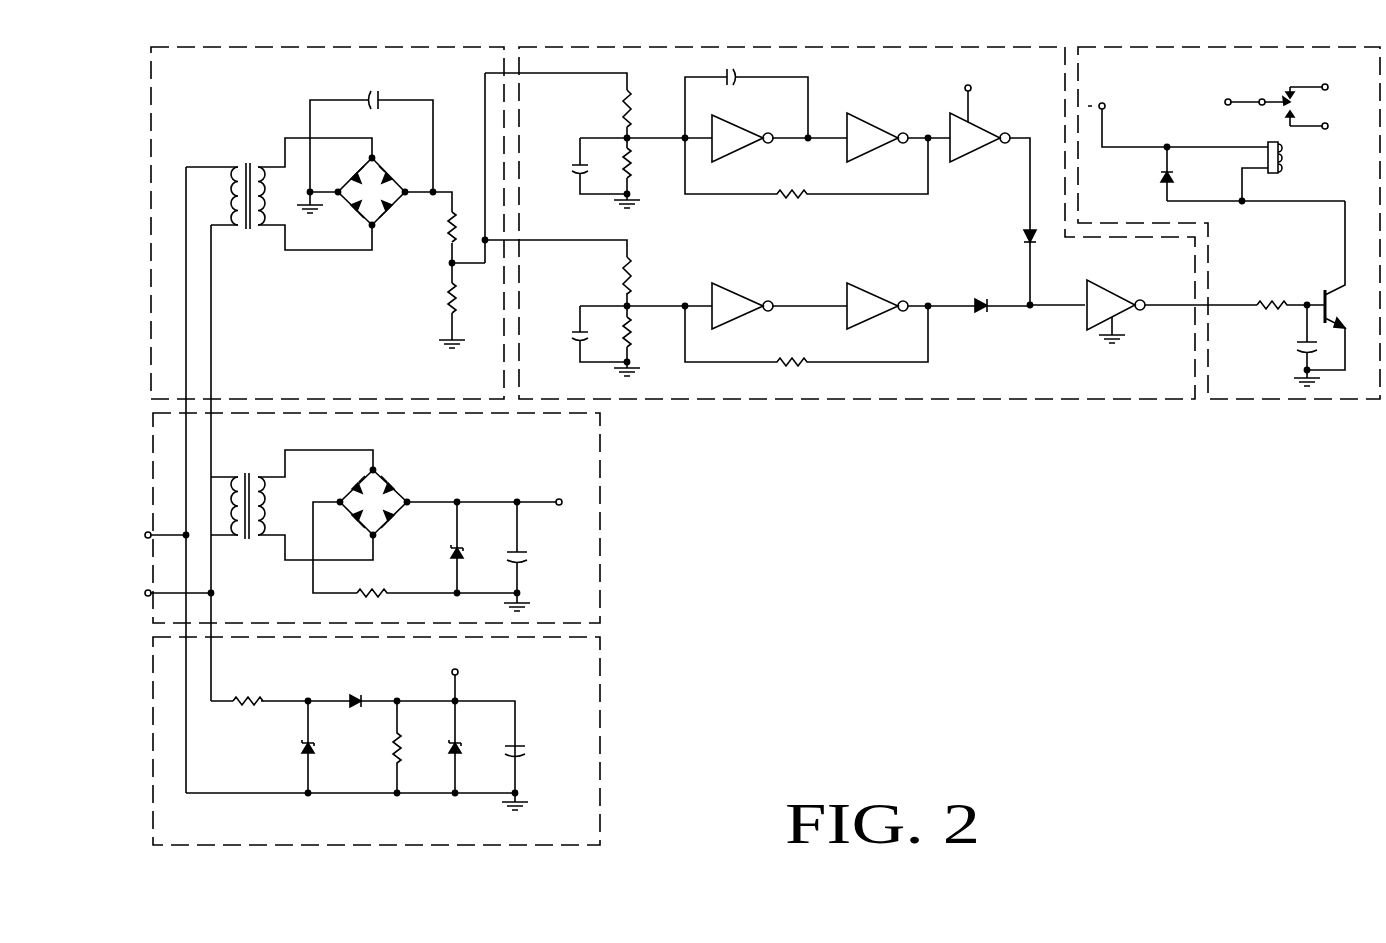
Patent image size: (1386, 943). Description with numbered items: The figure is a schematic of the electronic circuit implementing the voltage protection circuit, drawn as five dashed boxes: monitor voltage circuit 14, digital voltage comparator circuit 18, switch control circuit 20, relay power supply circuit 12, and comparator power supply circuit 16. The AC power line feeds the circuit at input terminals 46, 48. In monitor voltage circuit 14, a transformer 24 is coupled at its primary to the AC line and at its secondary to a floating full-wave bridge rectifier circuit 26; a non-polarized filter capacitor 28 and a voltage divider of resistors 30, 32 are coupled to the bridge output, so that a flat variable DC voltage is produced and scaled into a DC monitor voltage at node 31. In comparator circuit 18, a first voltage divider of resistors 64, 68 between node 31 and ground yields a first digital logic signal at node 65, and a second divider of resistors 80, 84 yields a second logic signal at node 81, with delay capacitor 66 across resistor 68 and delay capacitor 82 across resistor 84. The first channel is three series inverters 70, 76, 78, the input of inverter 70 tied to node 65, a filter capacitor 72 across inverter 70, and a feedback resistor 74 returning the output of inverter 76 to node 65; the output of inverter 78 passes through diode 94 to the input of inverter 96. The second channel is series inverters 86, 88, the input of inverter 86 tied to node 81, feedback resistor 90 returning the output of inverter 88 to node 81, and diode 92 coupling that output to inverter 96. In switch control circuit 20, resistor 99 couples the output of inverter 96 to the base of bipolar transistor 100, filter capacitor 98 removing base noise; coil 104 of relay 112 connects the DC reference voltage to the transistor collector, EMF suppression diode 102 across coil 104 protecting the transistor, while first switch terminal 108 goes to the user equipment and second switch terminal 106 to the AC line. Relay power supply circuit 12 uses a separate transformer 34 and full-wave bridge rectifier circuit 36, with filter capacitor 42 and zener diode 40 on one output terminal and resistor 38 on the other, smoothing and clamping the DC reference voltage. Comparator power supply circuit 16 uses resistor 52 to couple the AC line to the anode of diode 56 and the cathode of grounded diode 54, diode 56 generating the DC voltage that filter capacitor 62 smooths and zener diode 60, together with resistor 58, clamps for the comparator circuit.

The relay power supply circuit 12 is at (600, 461).
The monitor voltage circuit 14 is at (341, 47).
The comparator power supply circuit 16 is at (600, 680).
The digital voltage comparator circuit 18 is at (818, 47).
The switch control circuit 20 is at (1115, 47).
The transformer 24 is at (246, 153).
The floating full-wave bridge rectifier circuit 26 is at (393, 166).
The filter capacitor 28 is at (380, 81).
The resistor 30 is at (450, 219).
The node 31 is at (450, 263).
The resistor 32 is at (450, 290).
The transformer 34 is at (241, 547).
The full-wave bridge rectifier circuit 36 is at (406, 474).
The resistor 38 is at (365, 589).
The zener diode 40 is at (449, 553).
The filter capacitor 42 is at (525, 562).
The input terminal 46 is at (146, 533).
The input terminal 48 is at (146, 591).
The resistor 52 is at (250, 713).
The diode 54 is at (303, 750).
The diode 56 is at (352, 694).
The resistor 58 is at (390, 750).
The zener diode 60 is at (462, 752).
The filter capacitor 62 is at (524, 759).
The resistor 64 is at (620, 100).
The node 65 is at (632, 118).
The delay capacitor 66 is at (578, 177).
The resistor 68 is at (633, 160).
The digital logic inverter 70 is at (738, 116).
The filter capacitor 72 is at (722, 68).
The feedback resistor 74 is at (797, 200).
The digital logic inverter 76 is at (868, 116).
The digital logic inverter 78 is at (985, 118).
The resistor 80 is at (620, 267).
The node 81 is at (632, 286).
The delay capacitor 82 is at (578, 344).
The resistor 84 is at (633, 328).
The inverter 86 is at (738, 284).
The inverter 88 is at (868, 286).
The feedback resistor 90 is at (797, 368).
The diode 92 is at (980, 315).
The diode 94 is at (1024, 236).
The inverter 96 is at (1114, 287).
The filter capacitor 98 is at (1295, 353).
The resistor 99 is at (1268, 298).
The bipolar transistor 100 is at (1326, 287).
The EMF suppression diode 102 is at (1160, 179).
The coil 104 is at (1281, 172).
The second switch terminal 106 is at (1223, 103).
The first switch terminal 108 is at (1327, 130).
The relay 112 is at (1276, 82).